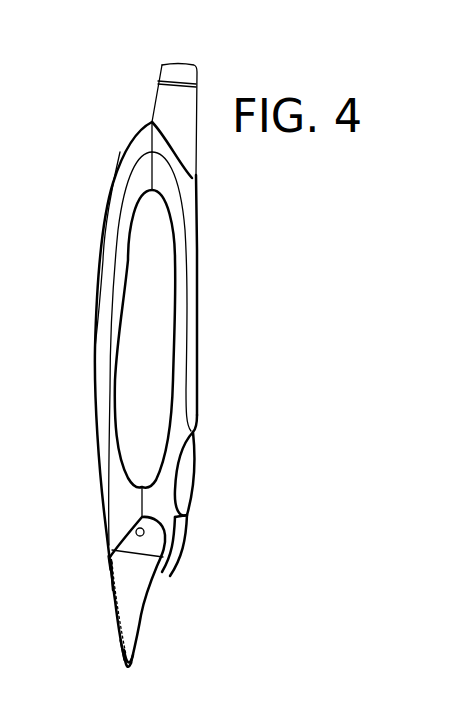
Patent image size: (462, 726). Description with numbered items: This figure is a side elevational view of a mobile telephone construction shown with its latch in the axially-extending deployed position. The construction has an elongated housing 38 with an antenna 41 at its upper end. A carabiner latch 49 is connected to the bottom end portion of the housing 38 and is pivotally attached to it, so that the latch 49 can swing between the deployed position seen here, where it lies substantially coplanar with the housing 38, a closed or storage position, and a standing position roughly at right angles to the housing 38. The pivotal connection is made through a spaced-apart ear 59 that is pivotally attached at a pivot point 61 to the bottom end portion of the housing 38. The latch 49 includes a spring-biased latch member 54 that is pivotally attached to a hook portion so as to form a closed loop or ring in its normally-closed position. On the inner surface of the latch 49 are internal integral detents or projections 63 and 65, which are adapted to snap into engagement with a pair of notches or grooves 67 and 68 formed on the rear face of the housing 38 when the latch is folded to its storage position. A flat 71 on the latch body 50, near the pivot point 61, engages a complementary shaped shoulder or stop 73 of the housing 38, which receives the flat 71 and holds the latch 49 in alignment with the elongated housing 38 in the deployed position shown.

The antenna 41 is at (172, 108).
The elongated housing 38 is at (98, 383).
The ear 59 is at (136, 518).
The pivot point 61 is at (128, 520).
The shoulder or stop 73 is at (118, 547).
The internal integral detent or projection 65 is at (110, 562).
The carabiner latch 49 is at (104, 594).
The latch body 50 is at (118, 629).
The internal integral detent or projection 63 is at (120, 653).
The spring-biased latch member 54 is at (132, 662).
The notch or groove 67 is at (200, 430).
The notch or groove 68 is at (187, 512).
The flat 71 is at (160, 565).